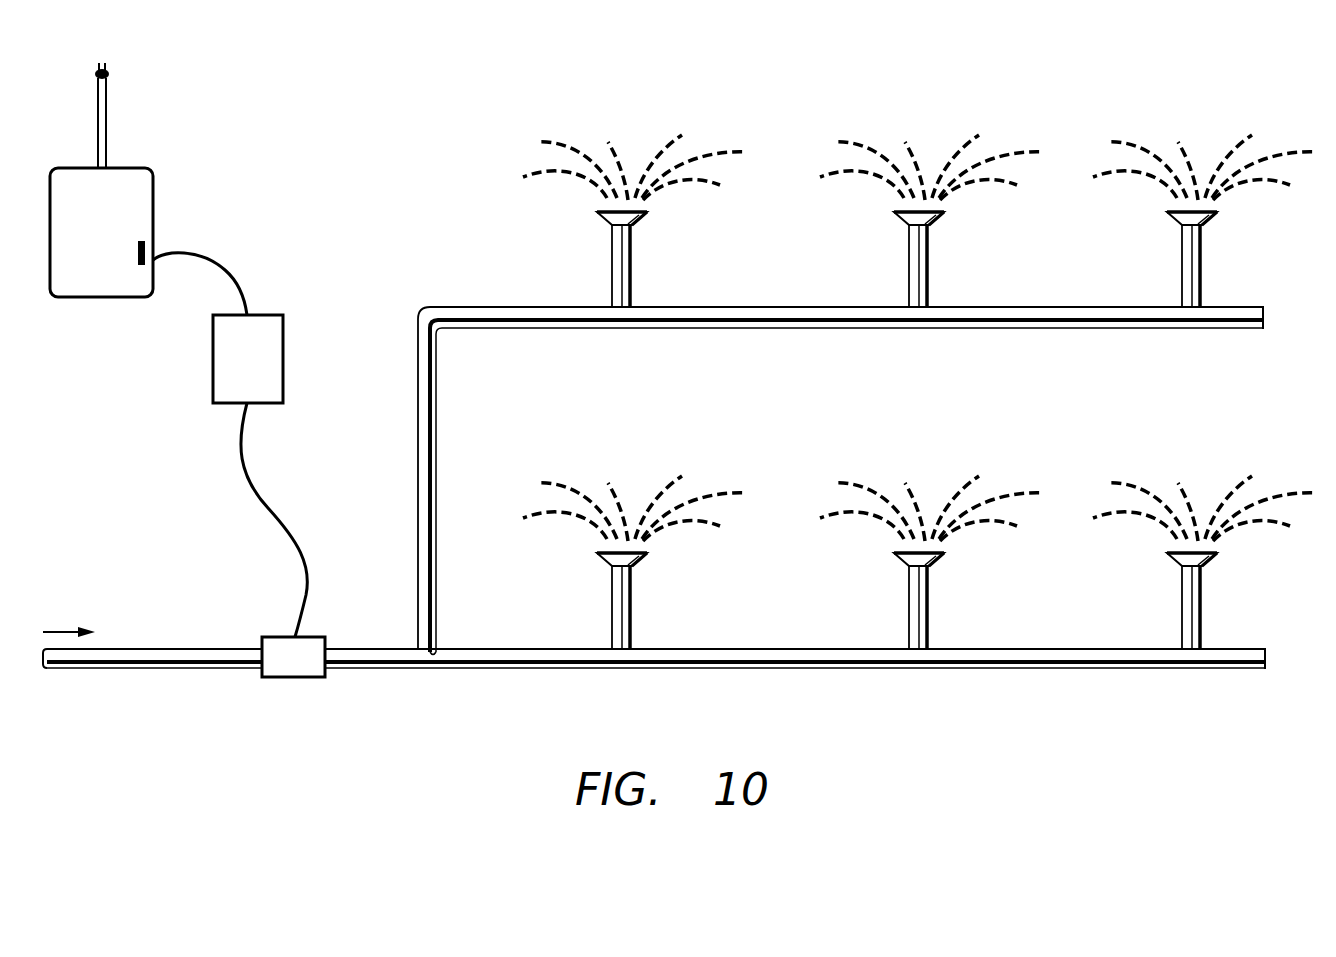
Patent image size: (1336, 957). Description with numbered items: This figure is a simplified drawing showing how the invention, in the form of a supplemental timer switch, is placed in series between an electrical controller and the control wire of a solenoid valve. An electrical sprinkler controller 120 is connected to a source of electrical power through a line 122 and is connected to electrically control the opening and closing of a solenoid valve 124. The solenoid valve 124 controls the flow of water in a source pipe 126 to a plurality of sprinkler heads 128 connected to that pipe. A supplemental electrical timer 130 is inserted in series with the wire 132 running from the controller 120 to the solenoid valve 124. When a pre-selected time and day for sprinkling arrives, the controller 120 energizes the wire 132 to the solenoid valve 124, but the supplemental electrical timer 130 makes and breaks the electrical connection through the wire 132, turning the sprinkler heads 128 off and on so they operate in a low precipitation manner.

The electrical sprinkler controller 120 is at (153, 205).
The line 122 is at (103, 128).
The solenoid valve 124 is at (317, 647).
The source pipe 126 is at (127, 648).
The sprinkler heads 128 is at (920, 392).
The supplemental electrical timer 130 is at (283, 355).
The wire 132 is at (235, 275).